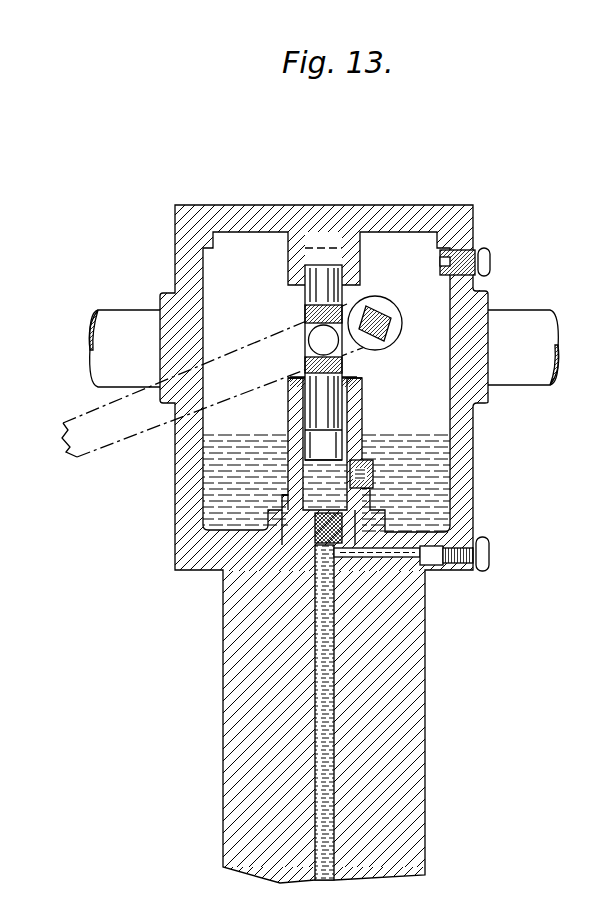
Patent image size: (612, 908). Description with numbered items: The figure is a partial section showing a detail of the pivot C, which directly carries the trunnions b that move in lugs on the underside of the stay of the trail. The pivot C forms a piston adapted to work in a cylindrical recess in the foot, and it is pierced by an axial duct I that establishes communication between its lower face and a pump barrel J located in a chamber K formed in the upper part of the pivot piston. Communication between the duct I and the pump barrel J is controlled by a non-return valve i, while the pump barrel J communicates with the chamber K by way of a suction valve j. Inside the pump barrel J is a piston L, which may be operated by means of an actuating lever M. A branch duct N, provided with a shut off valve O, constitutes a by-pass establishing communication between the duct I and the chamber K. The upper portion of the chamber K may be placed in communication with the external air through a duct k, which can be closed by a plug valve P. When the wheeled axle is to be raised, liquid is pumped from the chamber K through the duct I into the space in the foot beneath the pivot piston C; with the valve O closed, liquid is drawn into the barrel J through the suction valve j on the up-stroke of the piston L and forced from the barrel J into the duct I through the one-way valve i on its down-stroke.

The pivot C is at (240, 762).
The chamber K is at (215, 273).
The pump barrel J is at (293, 415).
The piston L is at (359, 395).
The axial duct I is at (323, 675).
The non-return valve i is at (288, 493).
The suction valve j is at (373, 462).
The actuating lever M is at (387, 333).
The plug valve P is at (437, 262).
The duct k is at (474, 272).
The branch duct N is at (378, 553).
The shut off valve O is at (457, 571).
The trunnions b is at (112, 323).